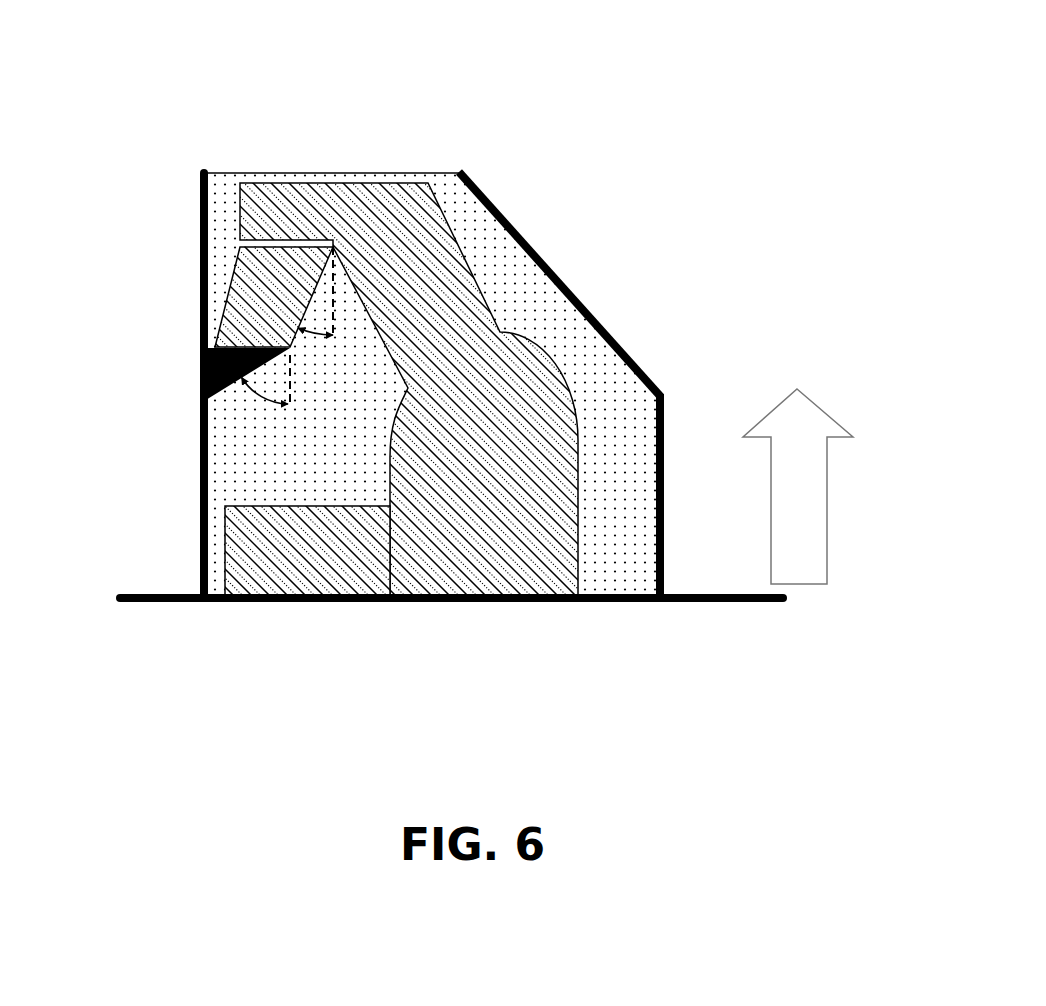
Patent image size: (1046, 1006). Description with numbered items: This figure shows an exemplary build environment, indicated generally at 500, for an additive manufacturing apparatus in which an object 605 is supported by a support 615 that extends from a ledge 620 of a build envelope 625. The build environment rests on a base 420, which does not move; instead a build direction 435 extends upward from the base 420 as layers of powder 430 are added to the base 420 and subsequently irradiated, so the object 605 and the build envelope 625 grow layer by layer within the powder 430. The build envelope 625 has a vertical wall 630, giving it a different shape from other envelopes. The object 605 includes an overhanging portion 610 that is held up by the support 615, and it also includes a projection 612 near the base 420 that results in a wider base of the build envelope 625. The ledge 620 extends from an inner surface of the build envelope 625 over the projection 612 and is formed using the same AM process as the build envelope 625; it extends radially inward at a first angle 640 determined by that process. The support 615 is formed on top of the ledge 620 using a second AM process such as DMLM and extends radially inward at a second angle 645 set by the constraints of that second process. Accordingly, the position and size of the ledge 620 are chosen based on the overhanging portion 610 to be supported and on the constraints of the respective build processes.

The semiconductor device structure 500 is at (182, 66).
The object 605 is at (398, 183).
The overhanging portion 610 is at (273, 173).
The support 615 is at (242, 283).
The projection 612 is at (300, 507).
The ledge 620 is at (203, 373).
The vertical wall 630 is at (203, 433).
The first angle 640 is at (262, 395).
The second angle 645 is at (310, 337).
The powder 430 is at (540, 293).
The build envelope 625 is at (625, 352).
The base 420 is at (688, 598).
The build direction 435 is at (827, 508).